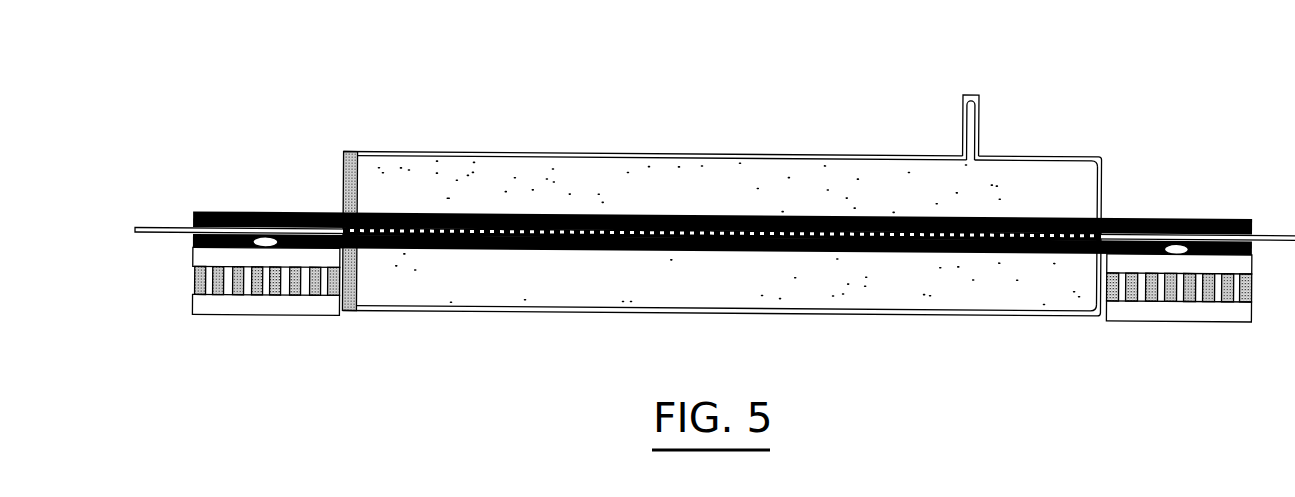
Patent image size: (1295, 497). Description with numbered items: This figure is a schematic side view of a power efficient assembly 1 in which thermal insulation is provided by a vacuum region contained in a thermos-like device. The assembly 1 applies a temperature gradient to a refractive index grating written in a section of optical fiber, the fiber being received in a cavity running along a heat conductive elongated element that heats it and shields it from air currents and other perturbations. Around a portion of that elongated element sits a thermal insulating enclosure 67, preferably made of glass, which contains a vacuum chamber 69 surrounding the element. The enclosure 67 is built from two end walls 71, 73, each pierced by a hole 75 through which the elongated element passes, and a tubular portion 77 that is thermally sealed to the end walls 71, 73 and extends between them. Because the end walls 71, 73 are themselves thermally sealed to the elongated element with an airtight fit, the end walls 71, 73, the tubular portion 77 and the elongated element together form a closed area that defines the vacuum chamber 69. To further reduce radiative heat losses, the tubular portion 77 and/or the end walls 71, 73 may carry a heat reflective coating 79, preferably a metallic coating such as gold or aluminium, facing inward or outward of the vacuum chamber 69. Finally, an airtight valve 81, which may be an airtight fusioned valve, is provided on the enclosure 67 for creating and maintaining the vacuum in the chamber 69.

The power efficient assembly 1 is at (628, 90).
The thermal insulating enclosure 67 is at (727, 234).
The vacuum chamber 69 is at (471, 283).
The end wall 71 is at (343, 192).
The end wall 73 is at (1103, 195).
The hole 75 is at (1108, 216).
The tubular portion 77 is at (537, 153).
The heat reflective coating 79 is at (694, 155).
The airtight valve 81 is at (962, 132).